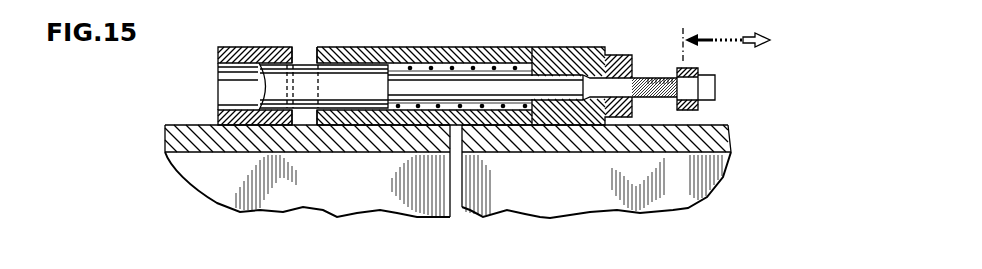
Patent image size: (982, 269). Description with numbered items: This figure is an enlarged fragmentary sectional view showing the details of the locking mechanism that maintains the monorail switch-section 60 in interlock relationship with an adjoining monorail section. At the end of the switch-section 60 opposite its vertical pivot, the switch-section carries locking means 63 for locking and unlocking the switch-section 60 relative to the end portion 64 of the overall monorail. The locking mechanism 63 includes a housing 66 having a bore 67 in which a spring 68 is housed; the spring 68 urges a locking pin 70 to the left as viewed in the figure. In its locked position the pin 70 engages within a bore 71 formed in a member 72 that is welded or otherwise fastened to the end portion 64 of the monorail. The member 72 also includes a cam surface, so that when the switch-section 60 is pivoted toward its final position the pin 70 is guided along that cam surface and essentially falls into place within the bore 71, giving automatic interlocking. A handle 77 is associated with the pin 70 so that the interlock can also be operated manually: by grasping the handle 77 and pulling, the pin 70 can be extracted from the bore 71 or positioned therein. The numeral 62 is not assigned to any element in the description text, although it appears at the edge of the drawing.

The monorail switch-section 60 is at (617, 212).
The element 62 is at (850, 7).
The locking means 63 is at (561, 43).
The end portion 64 is at (347, 198).
The housing 66 is at (445, 50).
The bore 67 is at (500, 67).
The spring 68 is at (494, 107).
The locking pin 70 is at (345, 82).
The bore 71 is at (217, 72).
The member 72 is at (287, 64).
The handle 77 is at (685, 112).